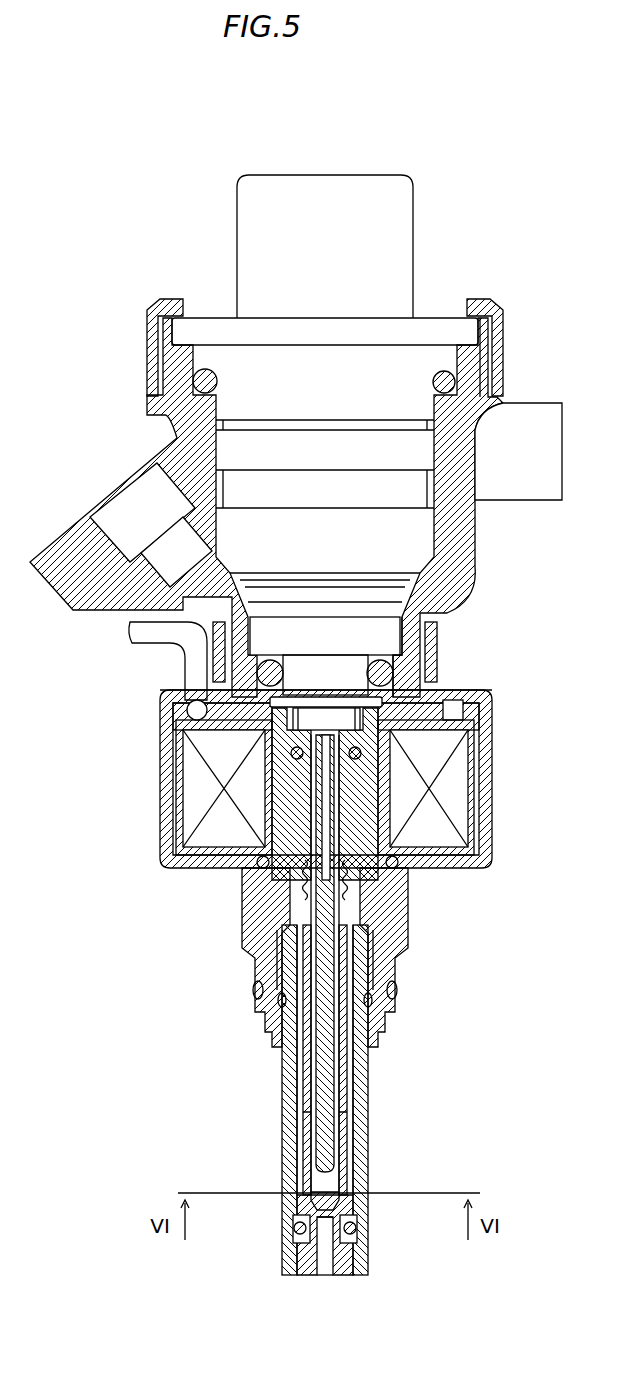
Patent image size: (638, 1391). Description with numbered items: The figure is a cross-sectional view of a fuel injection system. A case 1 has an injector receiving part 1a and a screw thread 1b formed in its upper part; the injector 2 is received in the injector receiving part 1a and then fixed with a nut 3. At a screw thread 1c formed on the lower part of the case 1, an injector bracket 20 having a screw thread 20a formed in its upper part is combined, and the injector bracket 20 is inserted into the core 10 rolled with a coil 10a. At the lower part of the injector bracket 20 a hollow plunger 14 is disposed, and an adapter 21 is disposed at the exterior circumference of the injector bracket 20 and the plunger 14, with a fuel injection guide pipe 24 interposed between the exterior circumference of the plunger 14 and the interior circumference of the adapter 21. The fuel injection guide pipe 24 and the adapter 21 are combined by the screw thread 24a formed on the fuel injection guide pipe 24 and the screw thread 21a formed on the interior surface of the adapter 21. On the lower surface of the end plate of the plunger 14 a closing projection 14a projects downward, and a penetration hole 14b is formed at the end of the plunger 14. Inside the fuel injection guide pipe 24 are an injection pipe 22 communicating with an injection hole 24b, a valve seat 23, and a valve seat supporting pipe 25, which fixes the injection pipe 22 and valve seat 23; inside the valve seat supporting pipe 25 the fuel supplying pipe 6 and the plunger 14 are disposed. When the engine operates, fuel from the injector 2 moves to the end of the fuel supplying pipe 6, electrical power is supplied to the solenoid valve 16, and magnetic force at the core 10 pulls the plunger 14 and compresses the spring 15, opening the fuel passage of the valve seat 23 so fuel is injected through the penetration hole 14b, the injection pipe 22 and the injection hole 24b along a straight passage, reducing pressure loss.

The case 1 is at (460, 538).
The injector receiving part 1a is at (440, 607).
The screw thread 1b is at (497, 357).
The screw thread 1c is at (233, 667).
The injector 2 is at (403, 200).
The nut 3 is at (492, 308).
The fuel supplying pipe 6 is at (316, 1060).
The core 10 is at (472, 713).
The coil 10a is at (457, 780).
The plunger 14 is at (352, 1067).
The closing projection 14a is at (295, 1218).
The penetration hole 14b is at (312, 1190).
The spring 15 is at (405, 897).
The solenoid valve 16 is at (517, 823).
The injector bracket 20 is at (187, 713).
The screw thread 20a is at (240, 680).
The adapter 21 is at (260, 920).
The screw thread 21a is at (277, 970).
The injection pipe 22 is at (327, 1250).
The valve seat 23 is at (360, 1218).
The fuel injection guide pipe 24 is at (282, 1102).
The screw thread 24a is at (257, 985).
The injection hole 24b is at (332, 1276).
The valve seat supporting pipe 25 is at (357, 1162).